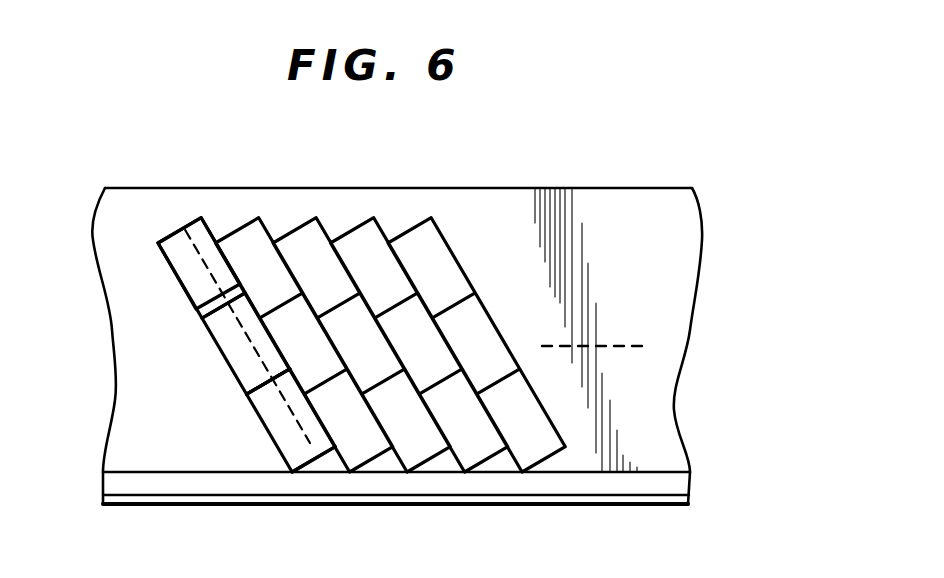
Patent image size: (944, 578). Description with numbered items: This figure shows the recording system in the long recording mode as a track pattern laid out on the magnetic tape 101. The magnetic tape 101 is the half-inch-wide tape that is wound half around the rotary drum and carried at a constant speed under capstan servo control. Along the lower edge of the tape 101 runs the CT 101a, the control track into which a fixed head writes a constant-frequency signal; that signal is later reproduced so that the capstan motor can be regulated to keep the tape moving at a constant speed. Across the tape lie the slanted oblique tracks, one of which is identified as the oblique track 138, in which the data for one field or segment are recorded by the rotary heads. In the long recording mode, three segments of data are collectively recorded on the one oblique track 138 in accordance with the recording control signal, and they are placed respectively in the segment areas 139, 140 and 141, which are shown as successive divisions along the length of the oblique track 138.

The magnetic tape 101 is at (654, 184).
The CT 101a is at (567, 480).
The oblique track 138 is at (170, 235).
The segment area 139 is at (172, 267).
The segment area 140 is at (216, 343).
The segment area 141 is at (254, 408).